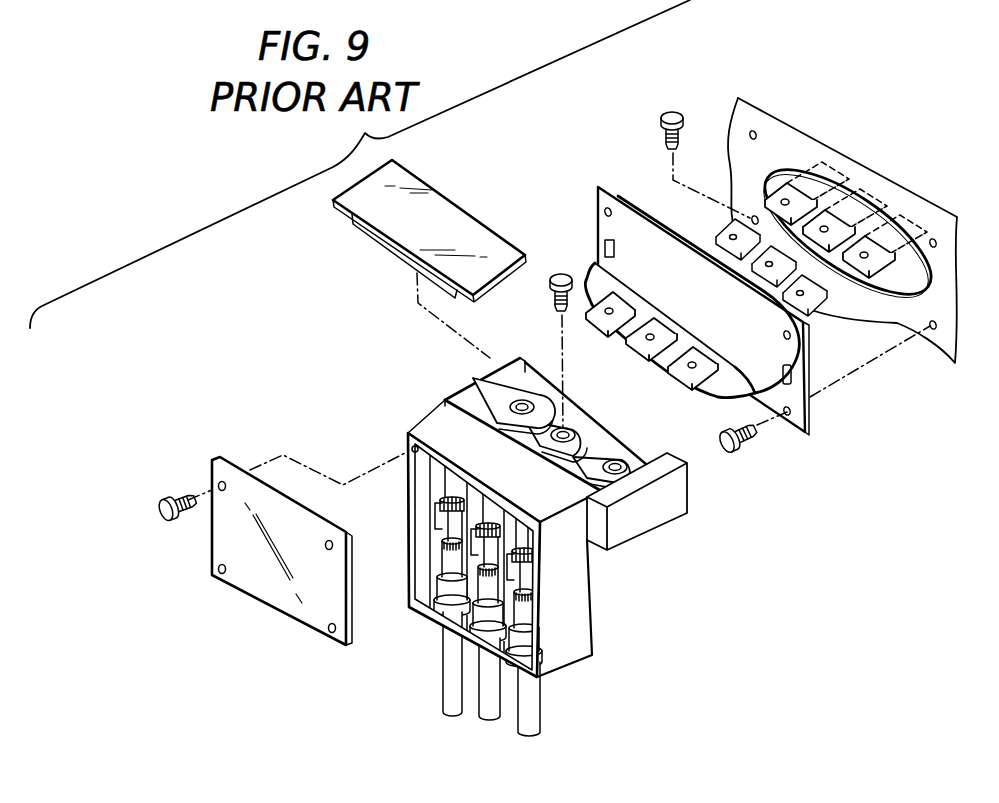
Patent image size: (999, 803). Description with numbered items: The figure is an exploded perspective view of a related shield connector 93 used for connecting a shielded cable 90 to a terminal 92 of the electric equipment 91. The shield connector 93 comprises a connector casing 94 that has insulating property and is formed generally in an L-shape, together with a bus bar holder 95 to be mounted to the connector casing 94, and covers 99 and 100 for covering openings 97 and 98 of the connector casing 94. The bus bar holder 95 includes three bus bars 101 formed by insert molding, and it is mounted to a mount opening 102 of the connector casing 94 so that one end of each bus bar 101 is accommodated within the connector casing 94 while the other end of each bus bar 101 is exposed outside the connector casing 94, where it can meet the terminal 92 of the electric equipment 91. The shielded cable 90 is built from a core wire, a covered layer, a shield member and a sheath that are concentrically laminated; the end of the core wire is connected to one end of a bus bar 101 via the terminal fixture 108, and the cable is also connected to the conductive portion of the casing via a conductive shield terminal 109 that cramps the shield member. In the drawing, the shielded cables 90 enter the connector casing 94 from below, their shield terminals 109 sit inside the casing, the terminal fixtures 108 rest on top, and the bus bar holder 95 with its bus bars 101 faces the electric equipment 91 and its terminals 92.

The shielded cable 90 is at (490, 678).
The electric equipment 91 is at (930, 342).
The terminal 92 is at (832, 213).
The shield connector 93 is at (805, 585).
The connector casing 94 is at (491, 548).
The bus bar holder 95 is at (646, 257).
The opening 97 is at (490, 390).
The opening 98 is at (491, 578).
The cover 99 is at (462, 232).
The cover 100 is at (258, 570).
The bus bar 101 is at (615, 328).
The mount opening 102 is at (665, 450).
The terminal fixture 108 is at (540, 441).
The conductive shield terminal 109 is at (442, 620).